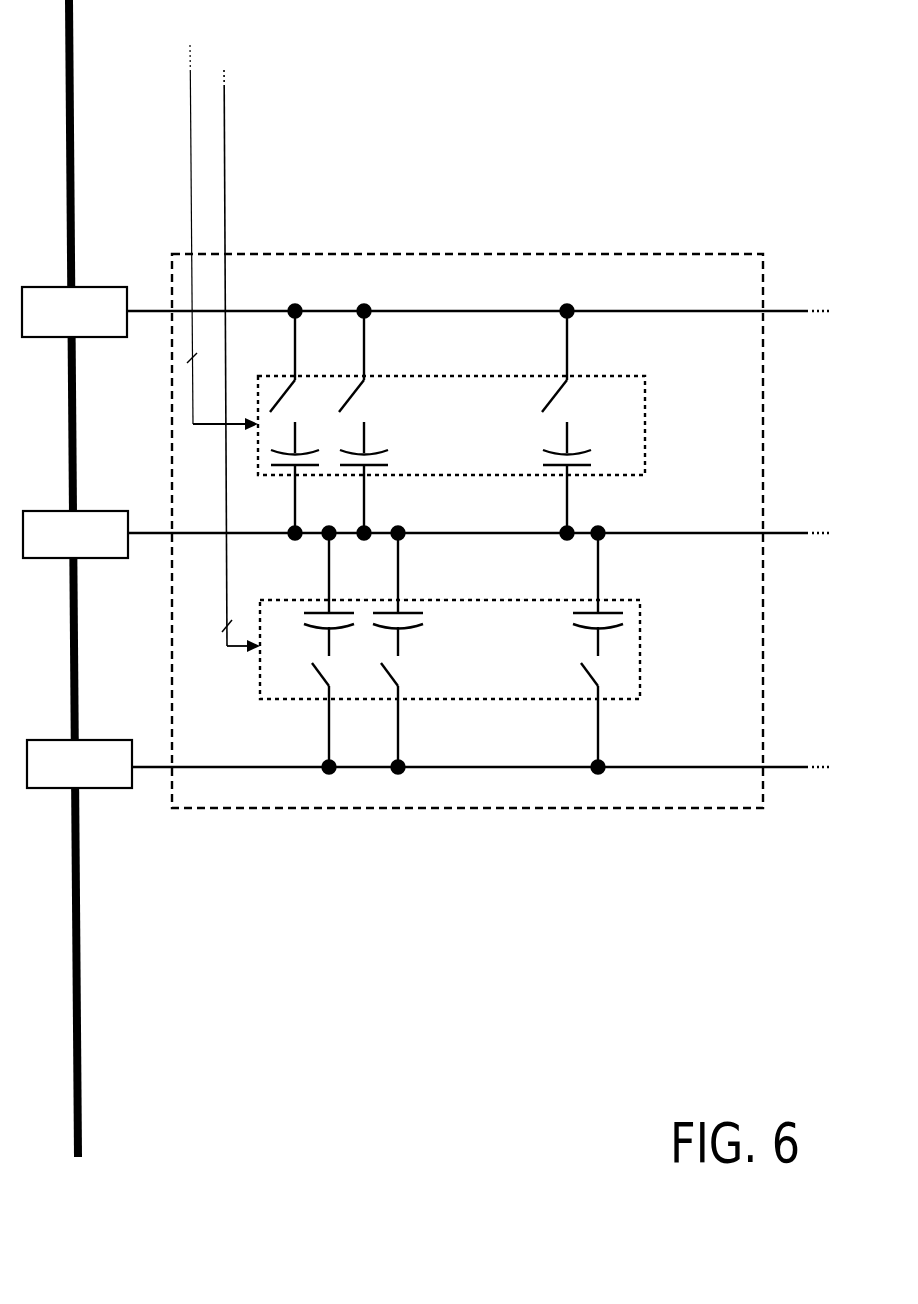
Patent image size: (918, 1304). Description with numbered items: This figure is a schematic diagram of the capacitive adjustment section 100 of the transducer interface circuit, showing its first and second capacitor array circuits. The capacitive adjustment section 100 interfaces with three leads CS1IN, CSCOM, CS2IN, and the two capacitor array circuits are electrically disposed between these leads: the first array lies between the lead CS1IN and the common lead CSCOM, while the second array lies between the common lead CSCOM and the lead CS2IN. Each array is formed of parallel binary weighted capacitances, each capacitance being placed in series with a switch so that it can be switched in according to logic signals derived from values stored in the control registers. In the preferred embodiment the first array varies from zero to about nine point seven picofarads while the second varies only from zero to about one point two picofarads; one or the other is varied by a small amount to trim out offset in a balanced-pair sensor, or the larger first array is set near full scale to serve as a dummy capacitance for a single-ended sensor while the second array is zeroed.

The capacitive adjustment section 100 is at (467, 641).
The lead CS1IN is at (74, 312).
The lead CSCOM is at (75, 534).
The lead CS2IN is at (79, 764).